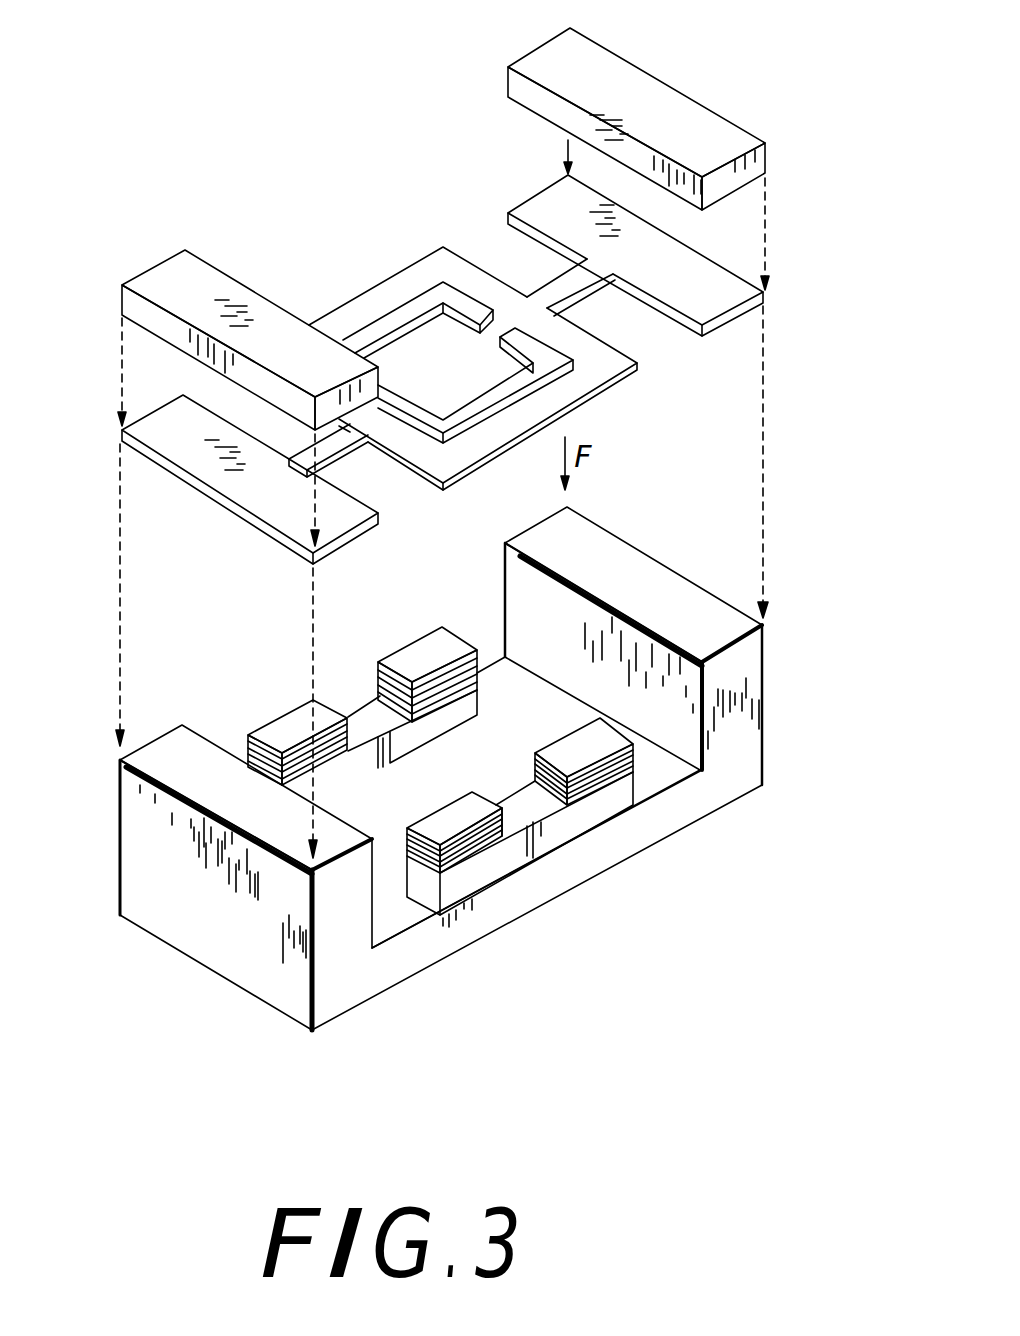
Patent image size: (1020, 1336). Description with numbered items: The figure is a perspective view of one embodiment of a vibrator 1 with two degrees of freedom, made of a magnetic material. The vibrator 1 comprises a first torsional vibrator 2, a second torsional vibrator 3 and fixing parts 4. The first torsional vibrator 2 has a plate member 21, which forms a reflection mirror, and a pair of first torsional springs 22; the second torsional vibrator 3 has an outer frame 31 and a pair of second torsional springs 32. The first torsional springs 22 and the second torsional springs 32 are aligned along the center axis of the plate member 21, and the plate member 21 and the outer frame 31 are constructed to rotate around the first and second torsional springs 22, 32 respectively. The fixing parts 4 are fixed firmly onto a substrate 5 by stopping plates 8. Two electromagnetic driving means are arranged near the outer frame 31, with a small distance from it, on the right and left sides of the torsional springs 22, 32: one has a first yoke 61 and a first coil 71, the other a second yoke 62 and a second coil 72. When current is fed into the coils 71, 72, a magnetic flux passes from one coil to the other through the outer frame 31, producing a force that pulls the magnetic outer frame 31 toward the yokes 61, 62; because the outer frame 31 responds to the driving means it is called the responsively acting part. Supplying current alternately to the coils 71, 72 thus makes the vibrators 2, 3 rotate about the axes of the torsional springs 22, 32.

The vibrator with two degrees of freedom 1 is at (406, 193).
The first torsional vibrator 2 is at (458, 453).
The plate member 21 is at (434, 400).
The first torsional springs 22 is at (497, 320).
The second torsional vibrator 3 is at (508, 387).
The outer frame 31 is at (599, 378).
The second torsional springs 32 is at (588, 283).
The fixing parts 4 is at (763, 300).
The substrate 5 is at (345, 975).
The first yoke 61 is at (495, 843).
The second yoke 62 is at (472, 703).
The first coil 71 is at (482, 873).
The second coil 72 is at (279, 725).
The stopping plates 8 is at (538, 60).